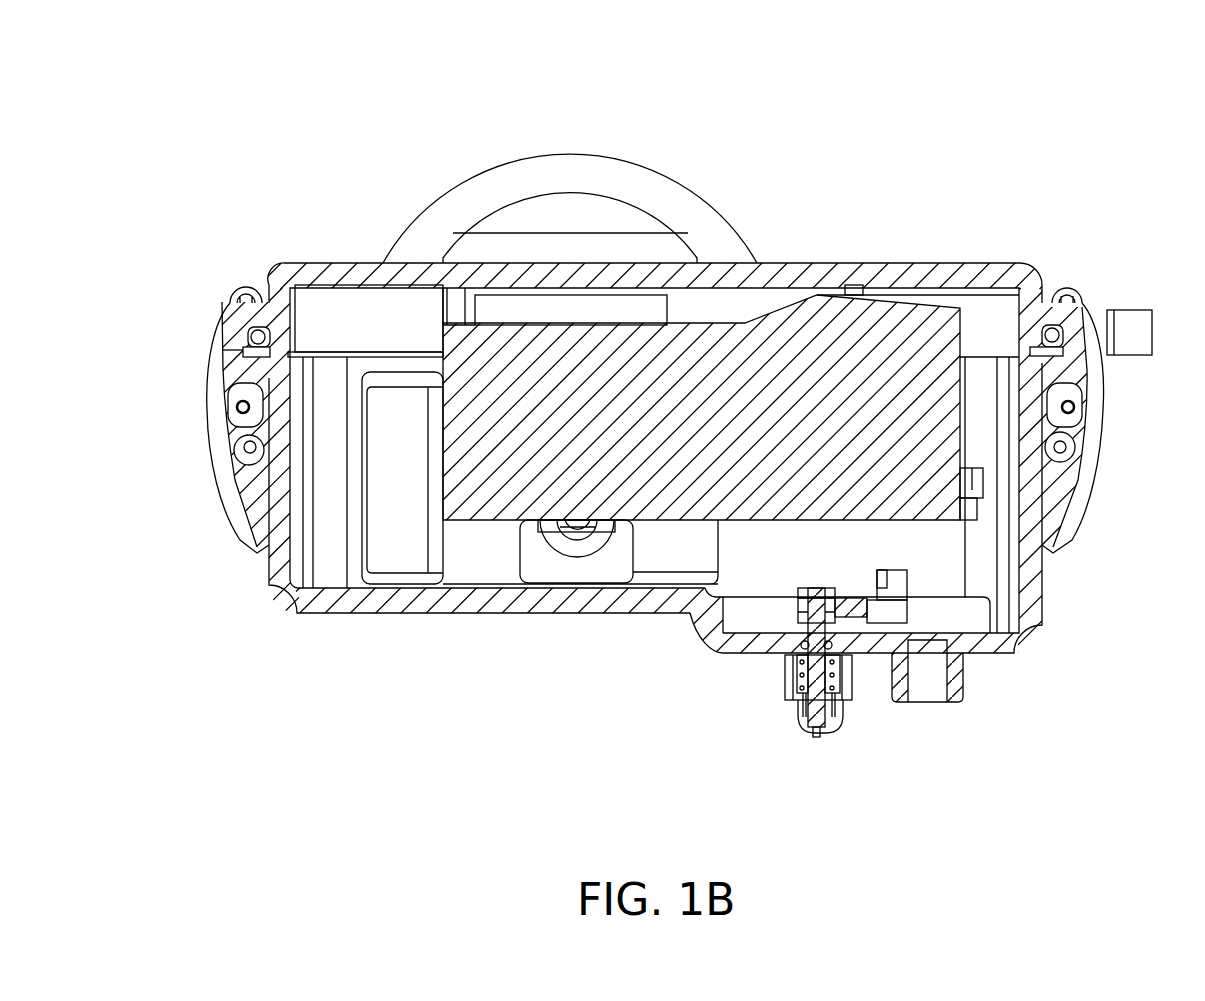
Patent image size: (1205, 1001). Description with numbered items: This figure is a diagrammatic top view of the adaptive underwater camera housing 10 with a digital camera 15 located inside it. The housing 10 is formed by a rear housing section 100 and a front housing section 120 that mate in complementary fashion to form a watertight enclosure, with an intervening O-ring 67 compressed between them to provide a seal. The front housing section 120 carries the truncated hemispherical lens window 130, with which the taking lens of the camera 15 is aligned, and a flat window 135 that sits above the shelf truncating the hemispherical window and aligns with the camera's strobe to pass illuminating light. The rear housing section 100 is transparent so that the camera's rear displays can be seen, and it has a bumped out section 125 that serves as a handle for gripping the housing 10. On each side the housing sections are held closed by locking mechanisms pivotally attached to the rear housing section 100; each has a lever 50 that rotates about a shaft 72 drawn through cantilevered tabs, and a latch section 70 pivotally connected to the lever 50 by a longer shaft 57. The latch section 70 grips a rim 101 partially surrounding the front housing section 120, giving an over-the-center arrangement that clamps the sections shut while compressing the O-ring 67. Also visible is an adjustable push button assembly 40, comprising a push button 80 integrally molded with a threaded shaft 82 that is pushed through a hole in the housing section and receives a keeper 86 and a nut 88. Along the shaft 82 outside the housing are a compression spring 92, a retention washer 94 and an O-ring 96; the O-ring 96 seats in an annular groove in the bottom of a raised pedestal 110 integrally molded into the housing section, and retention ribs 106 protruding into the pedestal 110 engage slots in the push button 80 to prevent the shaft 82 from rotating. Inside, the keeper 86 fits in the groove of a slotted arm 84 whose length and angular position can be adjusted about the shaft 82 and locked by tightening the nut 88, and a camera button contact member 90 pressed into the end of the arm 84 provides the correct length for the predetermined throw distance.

The adaptive underwater camera housing 10 is at (805, 90).
The digital camera 15 is at (866, 362).
The adjustable push button assembly 40 is at (849, 703).
The lever 50 is at (245, 505).
The longer shaft 57 is at (240, 408).
The O-ring 67 is at (256, 333).
The latch section 70 is at (213, 308).
The shaft 72 is at (248, 448).
The push button 80 is at (820, 737).
The shaft 82 is at (817, 588).
The slotted arm 84 is at (900, 611).
The keeper 86 is at (800, 622).
The nut 88 is at (808, 588).
The camera button contact member 90 is at (900, 578).
The compression spring 92 is at (800, 673).
The retention washer 94 is at (832, 650).
The O-ring 96 is at (801, 646).
The rear housing section 100 is at (405, 617).
The rim 101 is at (247, 298).
The retention rib 106 is at (933, 702).
The raised pedestal 110 is at (963, 677).
The front housing section 120 is at (940, 258).
The bumped out section 125 is at (746, 651).
The truncated hemispherical lens window 130 is at (596, 154).
The flat window 135 is at (595, 262).